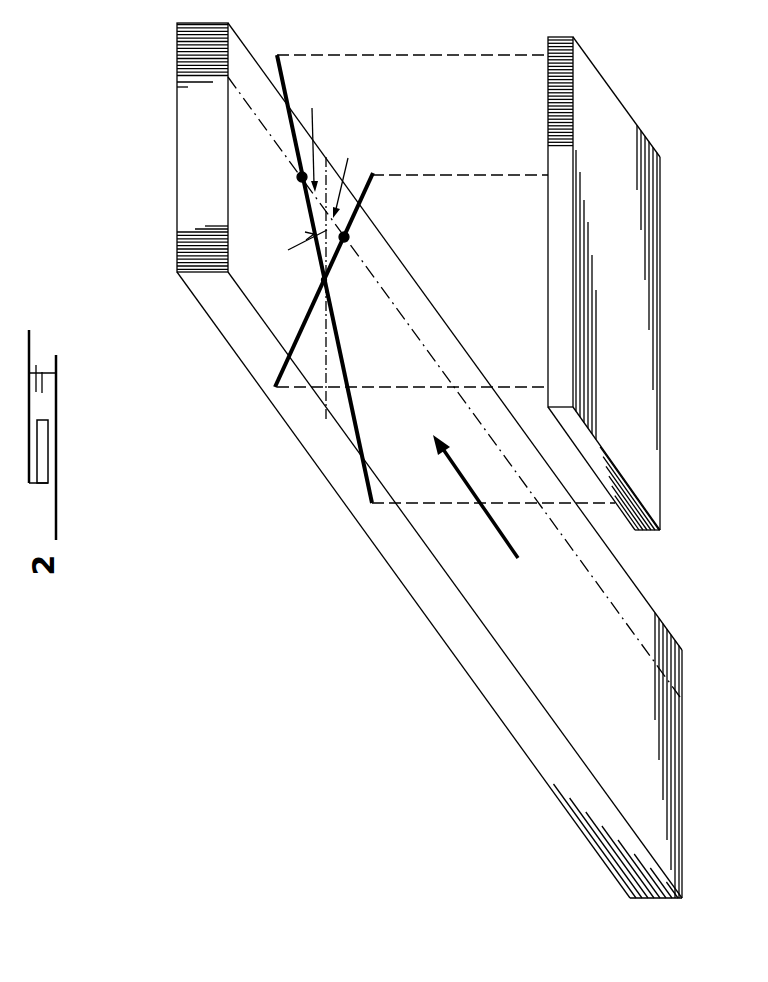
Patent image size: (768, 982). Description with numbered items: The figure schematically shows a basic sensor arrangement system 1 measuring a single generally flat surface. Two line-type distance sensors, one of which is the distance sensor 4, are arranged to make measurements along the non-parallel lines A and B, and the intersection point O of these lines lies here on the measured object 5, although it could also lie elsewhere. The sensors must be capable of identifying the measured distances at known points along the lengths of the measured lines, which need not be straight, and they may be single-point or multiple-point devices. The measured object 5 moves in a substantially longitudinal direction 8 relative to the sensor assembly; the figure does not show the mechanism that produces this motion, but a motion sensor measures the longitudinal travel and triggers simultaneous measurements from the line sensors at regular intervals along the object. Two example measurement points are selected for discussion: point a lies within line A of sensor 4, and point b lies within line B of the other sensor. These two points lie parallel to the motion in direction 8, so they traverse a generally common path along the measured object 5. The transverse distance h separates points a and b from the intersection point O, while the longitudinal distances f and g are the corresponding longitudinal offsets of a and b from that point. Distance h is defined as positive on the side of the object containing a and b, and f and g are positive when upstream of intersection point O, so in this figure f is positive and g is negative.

The sensor arrangement system 1 is at (172, 640).
The measured object 5 is at (530, 725).
The distance sensor 4 is at (634, 279).
The longitudinal direction 8 is at (492, 527).
The measured line A is at (277, 55).
The measured line B is at (373, 179).
The measurement point a is at (296, 177).
The measurement point b is at (350, 238).
The intersection point O is at (330, 283).
The longitudinal distance f is at (309, 139).
The longitudinal distance g is at (350, 177).
The transverse distance h is at (296, 248).